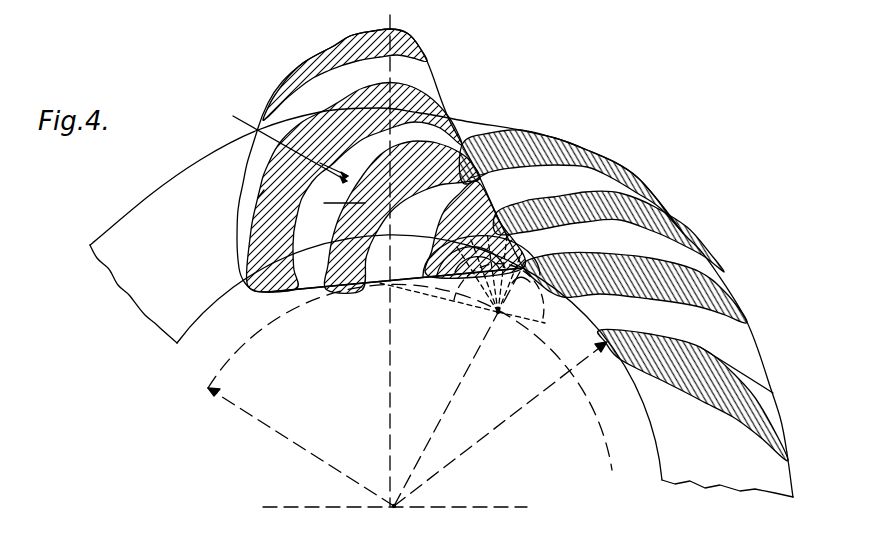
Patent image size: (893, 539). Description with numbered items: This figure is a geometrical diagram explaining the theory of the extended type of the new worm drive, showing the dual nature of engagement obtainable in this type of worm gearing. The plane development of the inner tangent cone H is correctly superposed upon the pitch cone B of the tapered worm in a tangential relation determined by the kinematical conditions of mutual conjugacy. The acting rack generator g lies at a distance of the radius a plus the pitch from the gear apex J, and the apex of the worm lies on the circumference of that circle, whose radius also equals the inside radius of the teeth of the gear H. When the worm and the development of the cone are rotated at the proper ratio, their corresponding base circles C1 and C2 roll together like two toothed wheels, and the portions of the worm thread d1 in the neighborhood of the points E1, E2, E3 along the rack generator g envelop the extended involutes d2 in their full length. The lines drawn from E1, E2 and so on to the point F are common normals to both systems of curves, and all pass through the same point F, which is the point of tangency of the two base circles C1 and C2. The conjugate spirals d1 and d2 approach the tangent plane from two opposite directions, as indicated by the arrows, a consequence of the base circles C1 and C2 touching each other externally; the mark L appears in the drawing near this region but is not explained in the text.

The pitch cone B is at (407, 57).
The rack generator g is at (255, 127).
The worm thread d1 is at (214, 198).
The point on rack generator E1 is at (345, 175).
The point on rack generator E2 is at (324, 203).
The point on rack generator E3 is at (487, 173).
The inner tangent cone H is at (720, 296).
The extended involutes d2 is at (659, 254).
The gear apex J is at (398, 508).
The radius a is at (301, 447).
The base circle C1 is at (546, 317).
The base circle C2 is at (605, 453).
The point of tangency F is at (493, 315).
The arc L is at (521, 293).